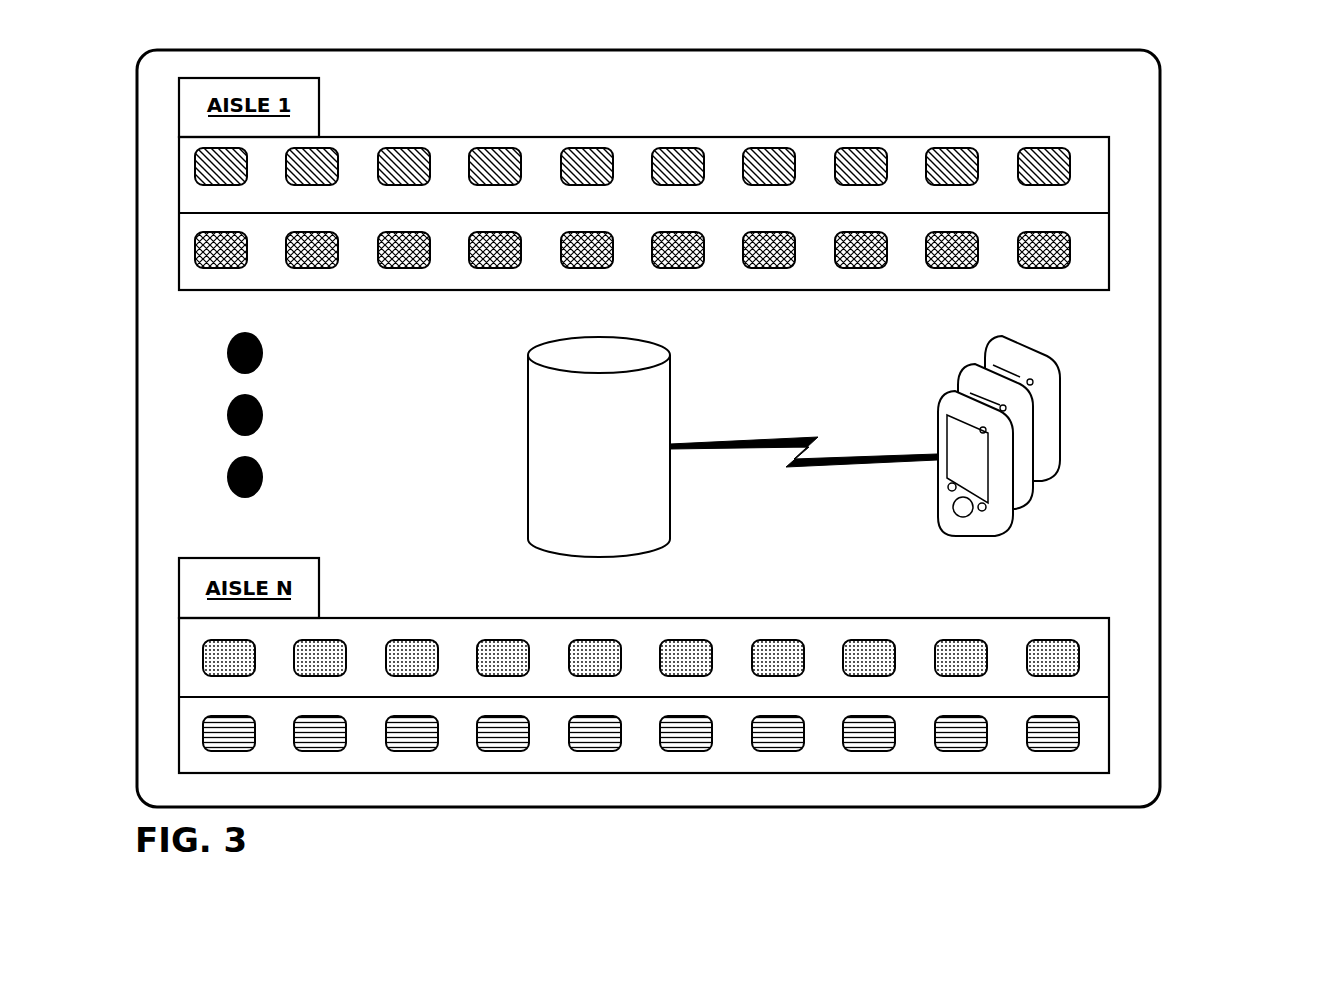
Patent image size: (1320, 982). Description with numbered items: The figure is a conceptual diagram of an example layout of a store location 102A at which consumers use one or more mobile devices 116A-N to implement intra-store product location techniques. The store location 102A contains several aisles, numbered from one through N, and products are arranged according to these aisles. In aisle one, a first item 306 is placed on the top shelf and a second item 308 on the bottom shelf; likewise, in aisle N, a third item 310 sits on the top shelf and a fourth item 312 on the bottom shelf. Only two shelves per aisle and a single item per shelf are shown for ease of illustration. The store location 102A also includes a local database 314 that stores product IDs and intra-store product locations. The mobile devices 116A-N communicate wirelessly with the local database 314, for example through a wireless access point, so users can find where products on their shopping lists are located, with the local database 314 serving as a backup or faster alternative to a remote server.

The store location 102A is at (675, 107).
The first item 306 is at (1070, 165).
The second item 308 is at (1070, 247).
The third item 310 is at (1078, 658).
The fourth item 312 is at (1078, 731).
The local database 314 is at (579, 494).
The mobile devices 116A-N is at (1058, 426).